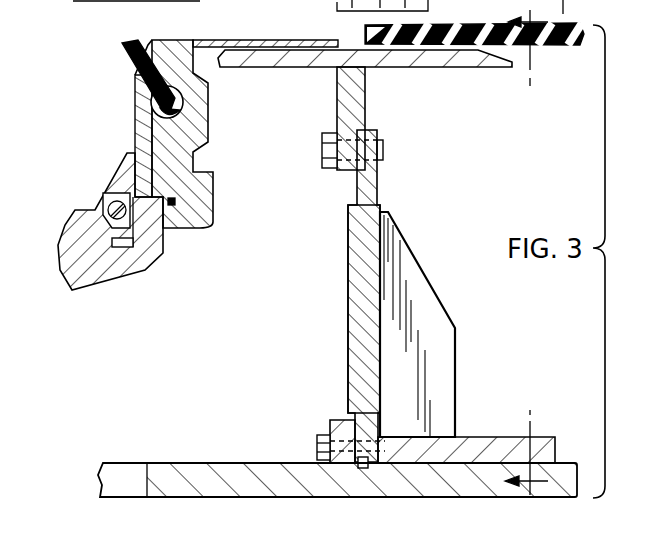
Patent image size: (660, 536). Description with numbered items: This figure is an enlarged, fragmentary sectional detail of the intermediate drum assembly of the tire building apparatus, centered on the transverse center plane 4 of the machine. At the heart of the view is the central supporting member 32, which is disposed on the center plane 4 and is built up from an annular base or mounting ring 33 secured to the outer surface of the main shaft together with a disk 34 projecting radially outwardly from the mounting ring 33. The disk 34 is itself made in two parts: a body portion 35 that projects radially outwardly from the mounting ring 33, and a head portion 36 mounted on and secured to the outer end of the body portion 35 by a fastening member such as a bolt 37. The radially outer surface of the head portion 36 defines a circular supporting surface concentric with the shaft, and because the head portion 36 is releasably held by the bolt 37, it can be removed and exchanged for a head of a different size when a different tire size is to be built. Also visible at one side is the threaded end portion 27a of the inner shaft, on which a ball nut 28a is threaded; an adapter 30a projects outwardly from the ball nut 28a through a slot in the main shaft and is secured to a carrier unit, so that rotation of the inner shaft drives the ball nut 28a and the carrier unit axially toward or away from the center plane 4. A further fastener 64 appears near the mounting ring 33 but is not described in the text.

The threaded end portion 27a is at (190, 0).
The adapter 30a is at (333, 11).
The ball nut 28a is at (430, 3).
The head portion 36 is at (342, 97).
The bolt 37 is at (322, 135).
The disk 34 is at (355, 250).
The body portion 35 is at (355, 305).
The central supporting member 32 is at (408, 242).
The mounting ring 33 is at (478, 437).
The bolt 64 is at (312, 438).
The center plane 4 is at (526, 252).